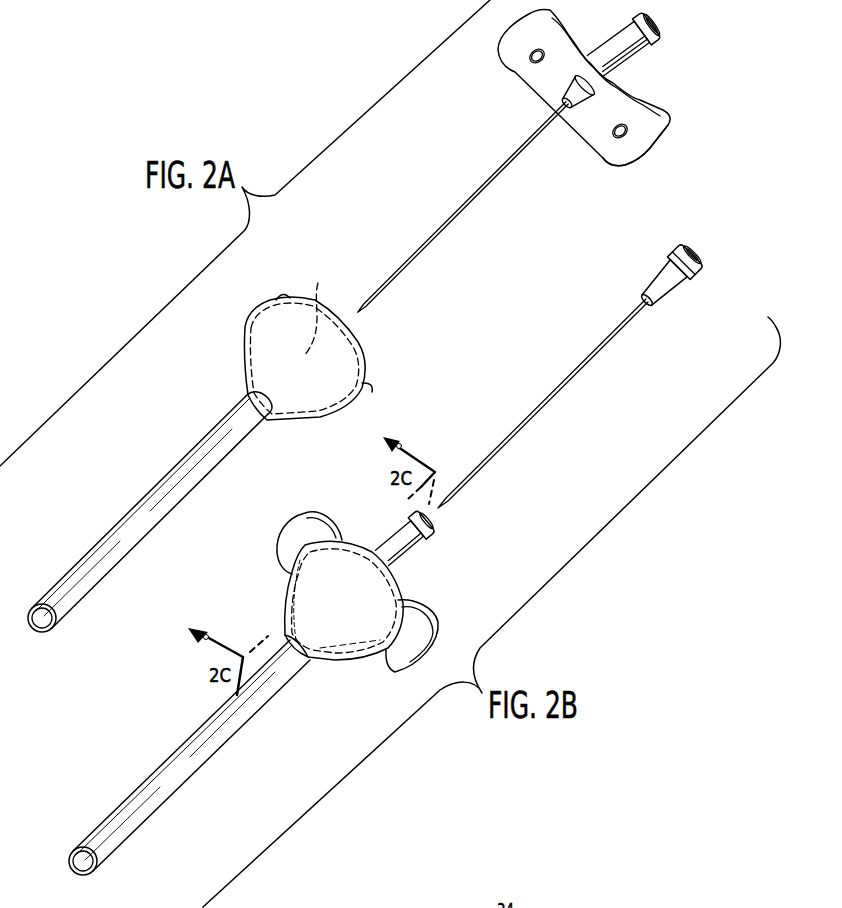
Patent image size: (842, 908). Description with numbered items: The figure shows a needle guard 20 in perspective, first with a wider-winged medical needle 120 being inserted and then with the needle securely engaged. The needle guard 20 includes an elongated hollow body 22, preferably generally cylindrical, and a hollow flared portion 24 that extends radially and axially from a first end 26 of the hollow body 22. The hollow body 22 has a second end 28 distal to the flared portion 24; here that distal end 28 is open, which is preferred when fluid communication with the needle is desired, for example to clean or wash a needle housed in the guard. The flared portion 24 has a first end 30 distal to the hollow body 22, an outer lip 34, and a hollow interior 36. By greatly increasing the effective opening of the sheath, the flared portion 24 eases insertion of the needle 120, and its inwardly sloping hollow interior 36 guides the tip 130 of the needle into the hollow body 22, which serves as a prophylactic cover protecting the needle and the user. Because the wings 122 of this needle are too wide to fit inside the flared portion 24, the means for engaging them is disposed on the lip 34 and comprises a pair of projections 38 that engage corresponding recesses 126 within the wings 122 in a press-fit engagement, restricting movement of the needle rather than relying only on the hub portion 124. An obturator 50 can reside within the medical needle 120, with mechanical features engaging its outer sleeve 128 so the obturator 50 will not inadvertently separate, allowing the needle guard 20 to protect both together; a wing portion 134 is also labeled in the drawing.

In FIG. 2A, the needle guard 20 is at (153, 428).
In FIG. 2A, the elongated hollow body 22 is at (158, 496).
In FIG. 2B, the elongated hollow body 22 is at (165, 770).
In FIG. 2A, the hollow flared portion 24 is at (230, 323).
In FIG. 2B, the hollow flared portion 24 is at (390, 667).
In FIG. 2A, the first end of the hollow body 26 is at (270, 422).
In FIG. 2A, the second end of the hollow body 28 is at (42, 621).
In FIG. 2B, the second end of the hollow body 28 is at (78, 851).
In FIG. 2A, the first end of the flared portion 30 is at (298, 312).
In FIG. 2A, the outer lip 34 is at (368, 356).
In FIG. 2A, the hollow interior 36 is at (318, 283).
In FIG. 2A, the projections 38 is at (281, 297).
In FIG. 2B, the obturator 50 is at (611, 364).
In FIG. 2A, the medical needle 120 is at (466, 159).
In FIG. 2A, the wings 122 is at (632, 150).
In FIG. 2B, the wings 122 is at (438, 611).
In FIG. 2A, the hub portion 124 is at (517, 45).
In FIG. 2A, the recesses 126 is at (535, 62).
In FIG. 2A, the outer sleeve 128 is at (626, 64).
In FIG. 2B, the outer sleeve 128 is at (405, 538).
In FIG. 2A, the tip of the needle 130 is at (363, 311).
In FIG. 2B, the hub wing 134 is at (313, 530).